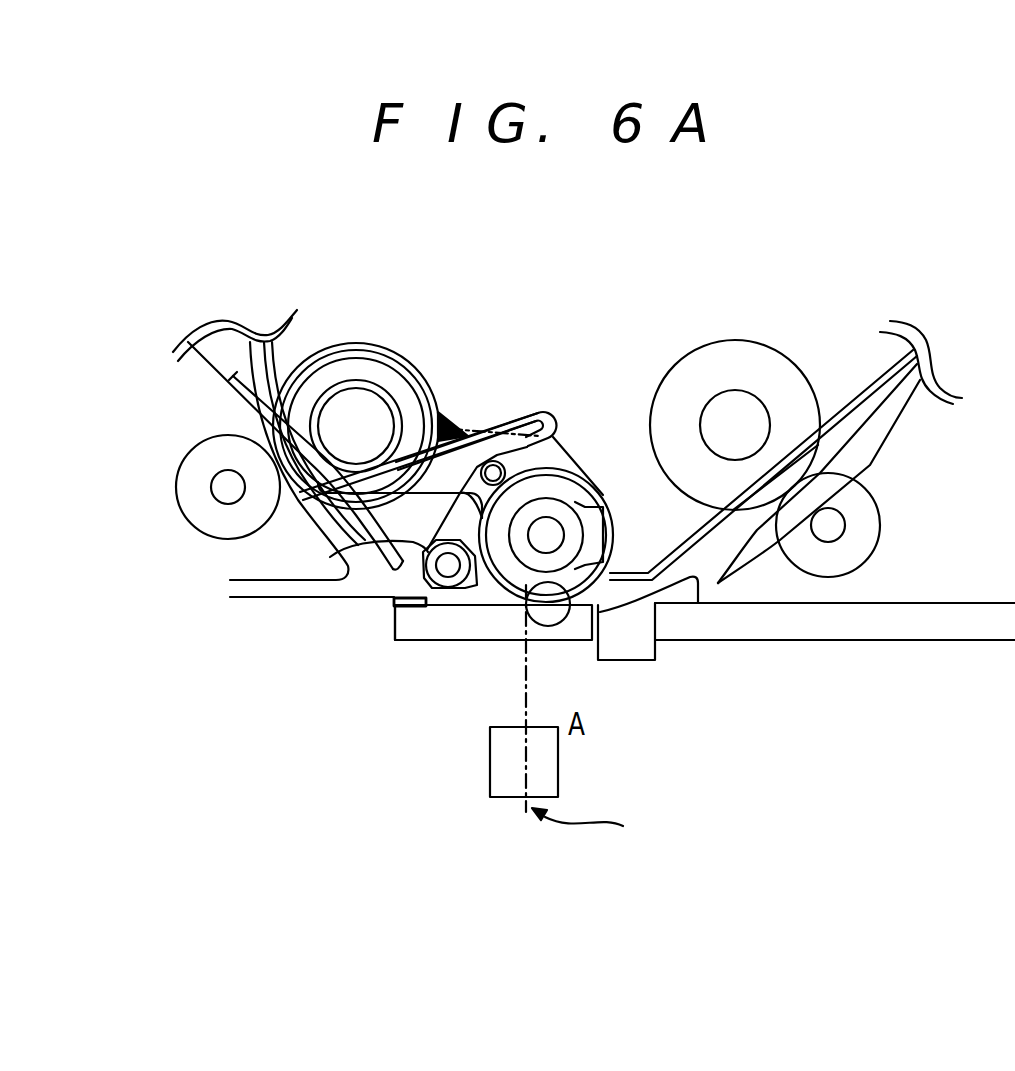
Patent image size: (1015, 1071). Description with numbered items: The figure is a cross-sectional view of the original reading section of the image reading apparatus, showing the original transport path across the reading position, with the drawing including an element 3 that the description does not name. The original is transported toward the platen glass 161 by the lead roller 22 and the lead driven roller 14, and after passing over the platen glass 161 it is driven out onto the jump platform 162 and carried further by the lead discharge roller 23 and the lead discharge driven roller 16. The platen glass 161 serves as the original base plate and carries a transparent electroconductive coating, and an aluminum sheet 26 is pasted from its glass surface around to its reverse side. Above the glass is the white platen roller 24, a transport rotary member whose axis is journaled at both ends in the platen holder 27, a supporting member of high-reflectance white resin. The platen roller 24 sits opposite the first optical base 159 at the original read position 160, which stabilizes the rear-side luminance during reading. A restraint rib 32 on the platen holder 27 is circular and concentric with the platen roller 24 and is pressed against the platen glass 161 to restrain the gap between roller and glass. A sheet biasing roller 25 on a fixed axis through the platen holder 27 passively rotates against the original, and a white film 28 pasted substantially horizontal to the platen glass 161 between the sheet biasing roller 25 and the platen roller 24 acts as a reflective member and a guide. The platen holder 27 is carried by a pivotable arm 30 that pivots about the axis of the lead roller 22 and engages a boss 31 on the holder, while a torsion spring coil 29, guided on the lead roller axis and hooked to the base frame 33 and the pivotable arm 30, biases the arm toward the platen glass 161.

The platen 3 is at (848, 628).
The lead driven roller 14 is at (198, 497).
The lead discharge driven roller 16 is at (855, 543).
The lead roller 22 is at (393, 383).
The lead discharge roller 23 is at (742, 352).
The platen roller 24 is at (573, 487).
The sheet biasing roller 25 is at (330, 557).
The aluminum sheet 26 is at (393, 614).
The platen holder 27 is at (524, 440).
The white film 28 is at (478, 590).
The torsion spring coil 29 is at (348, 358).
The pivotable arm 30 is at (437, 457).
The boss 31 is at (496, 460).
The restraint rib 32 is at (553, 622).
The base frame 33 is at (218, 377).
The first optical base 159 is at (550, 780).
The original read position 160 is at (604, 828).
The platen glass 161 is at (423, 631).
The jump platform 162 is at (640, 652).